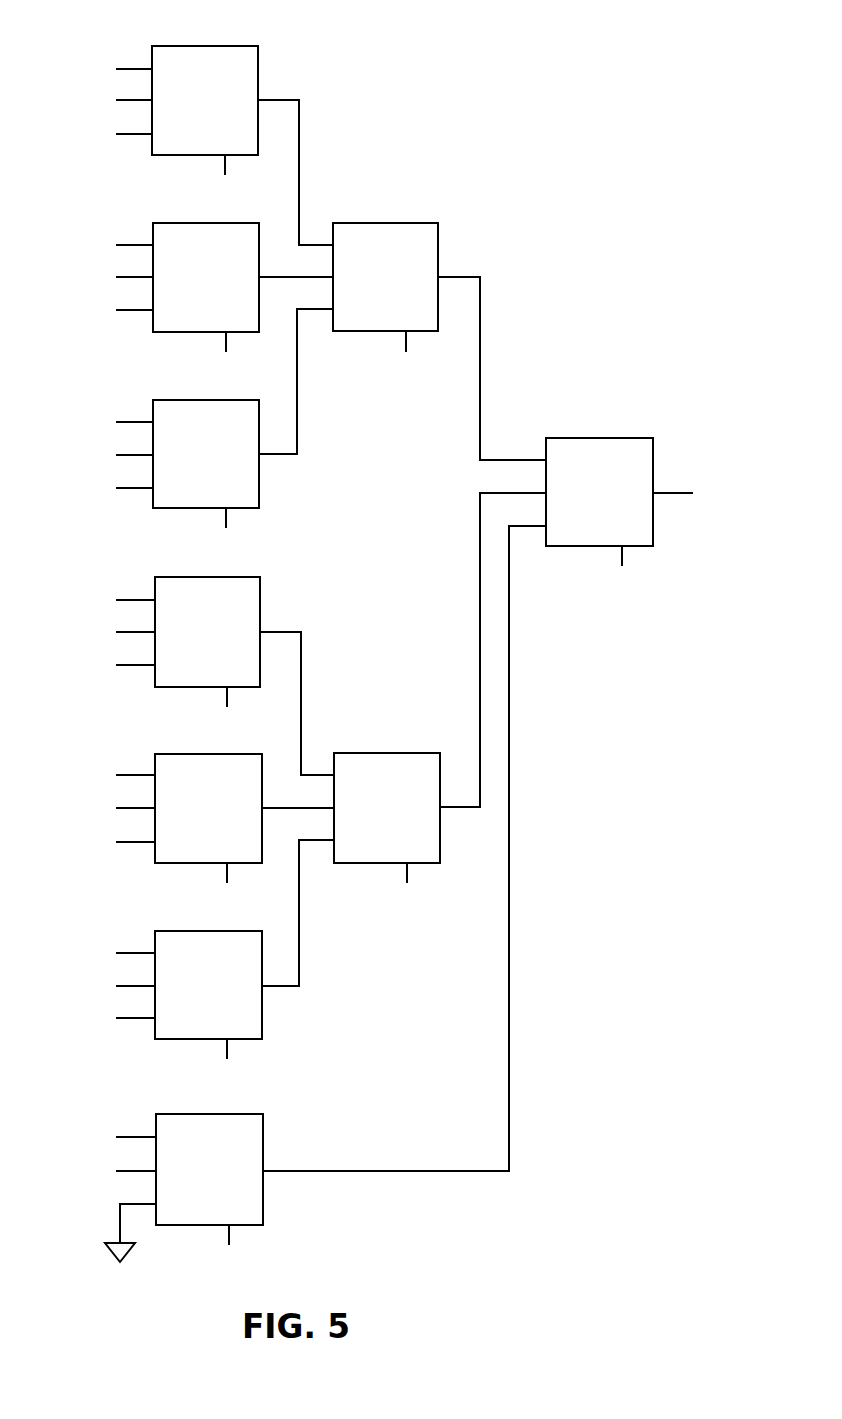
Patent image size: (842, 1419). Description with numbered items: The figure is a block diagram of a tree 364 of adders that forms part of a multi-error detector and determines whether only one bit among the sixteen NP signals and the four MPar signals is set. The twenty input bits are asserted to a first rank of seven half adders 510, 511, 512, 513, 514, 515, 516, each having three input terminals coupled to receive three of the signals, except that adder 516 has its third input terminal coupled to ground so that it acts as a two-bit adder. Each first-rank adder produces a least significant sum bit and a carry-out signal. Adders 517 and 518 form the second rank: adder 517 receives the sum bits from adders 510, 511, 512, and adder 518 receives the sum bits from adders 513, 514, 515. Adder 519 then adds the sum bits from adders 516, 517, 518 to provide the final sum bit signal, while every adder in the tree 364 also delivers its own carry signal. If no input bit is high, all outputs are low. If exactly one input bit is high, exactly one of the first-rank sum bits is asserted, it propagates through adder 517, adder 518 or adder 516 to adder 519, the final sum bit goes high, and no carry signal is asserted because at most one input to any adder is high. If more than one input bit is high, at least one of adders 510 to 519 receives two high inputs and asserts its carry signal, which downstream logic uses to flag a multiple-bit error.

The tree of adders 364 is at (539, 192).
The adder 510 is at (208, 46).
The adder 511 is at (185, 223).
The adder 512 is at (185, 400).
The adder 513 is at (185, 577).
The adder 514 is at (185, 754).
The adder 515 is at (185, 931).
The adder 516 is at (187, 1114).
The adder 517 is at (388, 223).
The adder 518 is at (390, 753).
The adder 519 is at (614, 438).